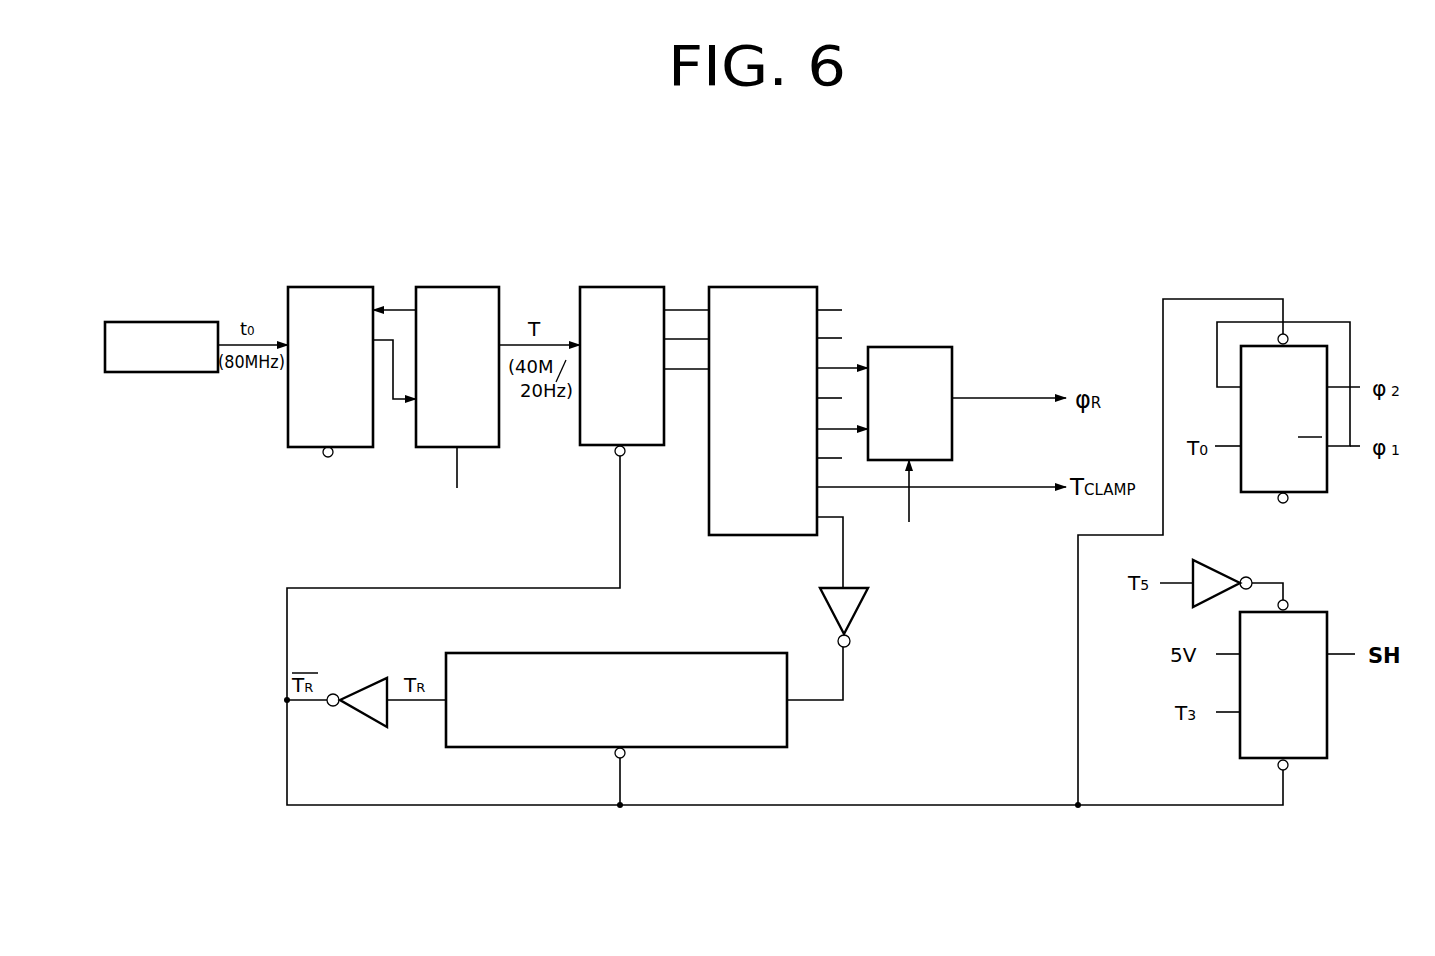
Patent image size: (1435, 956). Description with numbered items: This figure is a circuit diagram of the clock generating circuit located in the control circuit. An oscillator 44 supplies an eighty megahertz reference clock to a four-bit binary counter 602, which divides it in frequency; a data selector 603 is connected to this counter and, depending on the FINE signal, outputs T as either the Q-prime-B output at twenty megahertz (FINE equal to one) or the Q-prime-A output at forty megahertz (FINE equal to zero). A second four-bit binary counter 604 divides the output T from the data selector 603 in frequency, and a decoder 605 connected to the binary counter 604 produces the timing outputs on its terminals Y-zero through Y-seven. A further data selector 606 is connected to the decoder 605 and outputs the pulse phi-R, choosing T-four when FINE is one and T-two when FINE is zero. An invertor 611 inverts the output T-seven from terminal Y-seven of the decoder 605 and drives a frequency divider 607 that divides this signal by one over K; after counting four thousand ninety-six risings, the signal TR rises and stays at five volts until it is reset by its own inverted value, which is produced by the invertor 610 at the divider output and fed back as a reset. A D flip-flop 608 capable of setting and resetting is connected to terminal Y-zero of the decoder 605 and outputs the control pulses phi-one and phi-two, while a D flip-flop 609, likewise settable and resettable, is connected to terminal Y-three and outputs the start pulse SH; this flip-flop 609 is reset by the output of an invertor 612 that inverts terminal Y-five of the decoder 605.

The oscillator 44 is at (155, 322).
The 4-bit binary counter 602 is at (323, 287).
The data selector 603 is at (458, 287).
The 4-bit binary counter 604 is at (604, 287).
The decoder 605 is at (755, 287).
The data selector 606 is at (900, 347).
The frequency divider 607 is at (620, 653).
The D flip-flop 608 is at (1308, 492).
The D flip-flop 609 is at (1327, 688).
The invertor 610 is at (361, 688).
The invertor 611 is at (830, 607).
The invertor 612 is at (1216, 567).